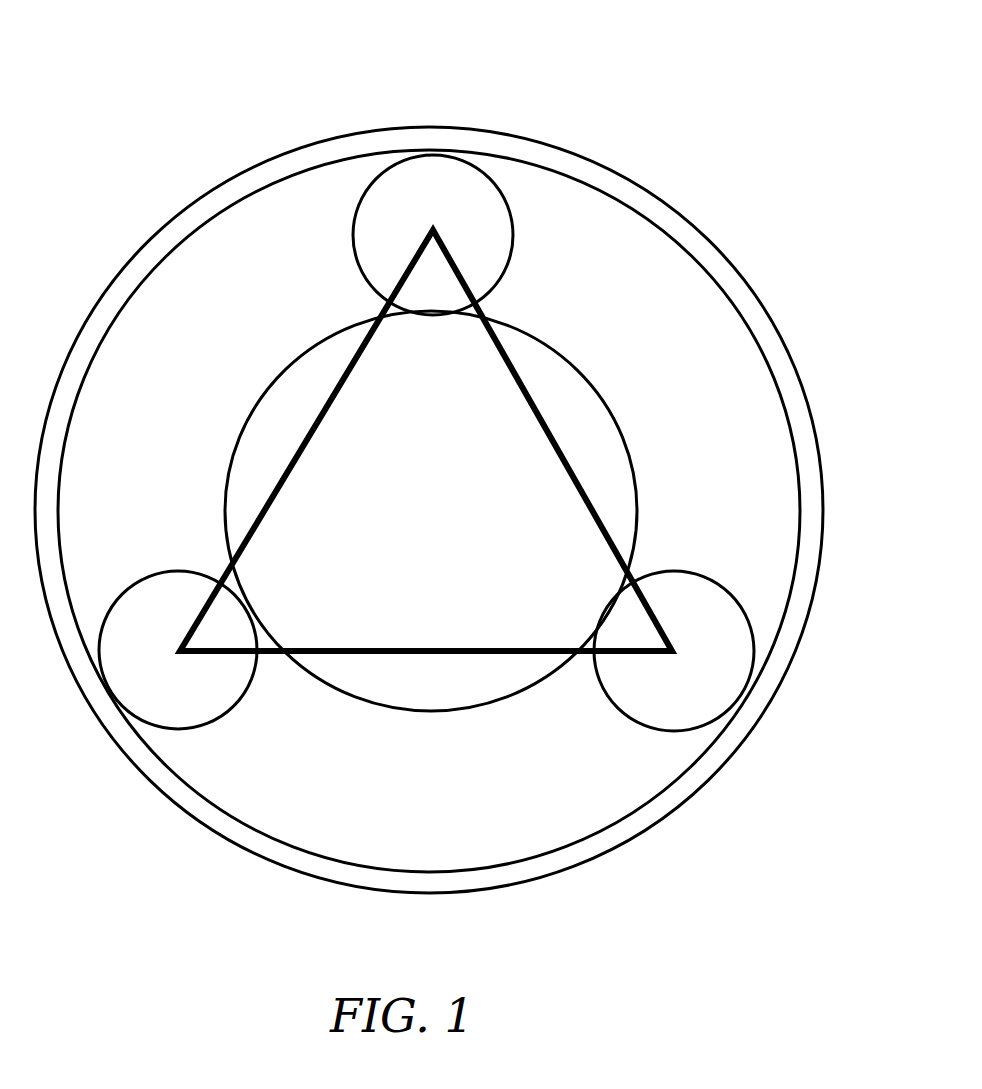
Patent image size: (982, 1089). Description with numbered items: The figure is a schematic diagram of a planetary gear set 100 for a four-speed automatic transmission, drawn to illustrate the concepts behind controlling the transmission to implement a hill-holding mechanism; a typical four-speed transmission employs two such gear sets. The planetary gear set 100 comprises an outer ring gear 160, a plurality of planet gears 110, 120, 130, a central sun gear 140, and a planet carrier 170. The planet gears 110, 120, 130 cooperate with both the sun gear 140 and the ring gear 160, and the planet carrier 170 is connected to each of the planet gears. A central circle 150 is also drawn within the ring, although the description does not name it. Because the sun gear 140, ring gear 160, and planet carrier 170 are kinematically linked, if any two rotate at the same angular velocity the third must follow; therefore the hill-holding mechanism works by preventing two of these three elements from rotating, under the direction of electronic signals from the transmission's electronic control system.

The planetary gear set 100 is at (706, 90).
The planet gear 110 is at (465, 217).
The planet gear 120 is at (708, 698).
The planet gear 130 is at (208, 698).
The sun gear 140 is at (456, 530).
The central circle 150 is at (585, 378).
The ring gear 160 is at (752, 283).
The planet carrier 170 is at (384, 646).